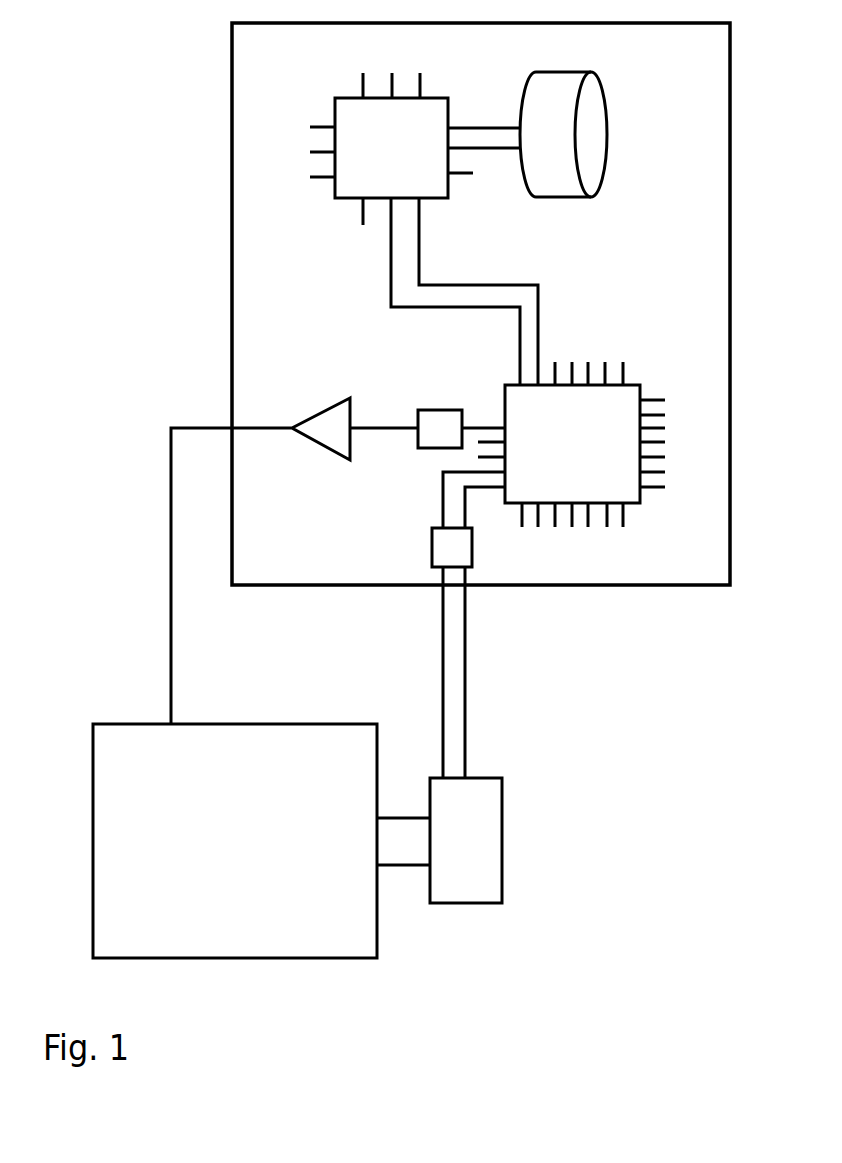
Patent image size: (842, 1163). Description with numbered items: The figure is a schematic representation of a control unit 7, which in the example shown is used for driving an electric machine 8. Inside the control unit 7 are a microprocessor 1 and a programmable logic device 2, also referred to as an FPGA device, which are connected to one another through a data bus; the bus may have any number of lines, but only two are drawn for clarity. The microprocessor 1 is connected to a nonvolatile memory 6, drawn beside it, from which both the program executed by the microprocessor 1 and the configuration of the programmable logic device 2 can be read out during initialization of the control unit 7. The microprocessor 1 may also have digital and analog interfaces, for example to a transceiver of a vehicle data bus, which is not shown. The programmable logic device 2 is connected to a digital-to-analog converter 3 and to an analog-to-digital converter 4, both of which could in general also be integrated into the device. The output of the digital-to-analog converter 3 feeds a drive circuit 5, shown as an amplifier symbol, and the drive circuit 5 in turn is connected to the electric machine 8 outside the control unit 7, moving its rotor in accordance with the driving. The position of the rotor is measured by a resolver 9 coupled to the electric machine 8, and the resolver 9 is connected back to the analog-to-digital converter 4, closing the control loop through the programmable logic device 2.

The microprocessor 1 is at (424, 229).
The programmable logic device 2 is at (554, 445).
The digital-to-analog converter 3 is at (406, 430).
The analog-to-digital converter 4 is at (452, 653).
The drive circuit 5 is at (260, 561).
The nonvolatile memory 6 is at (563, 134).
The control unit 7 is at (481, 304).
The electric machine 8 is at (261, 841).
The resolver 9 is at (466, 840).